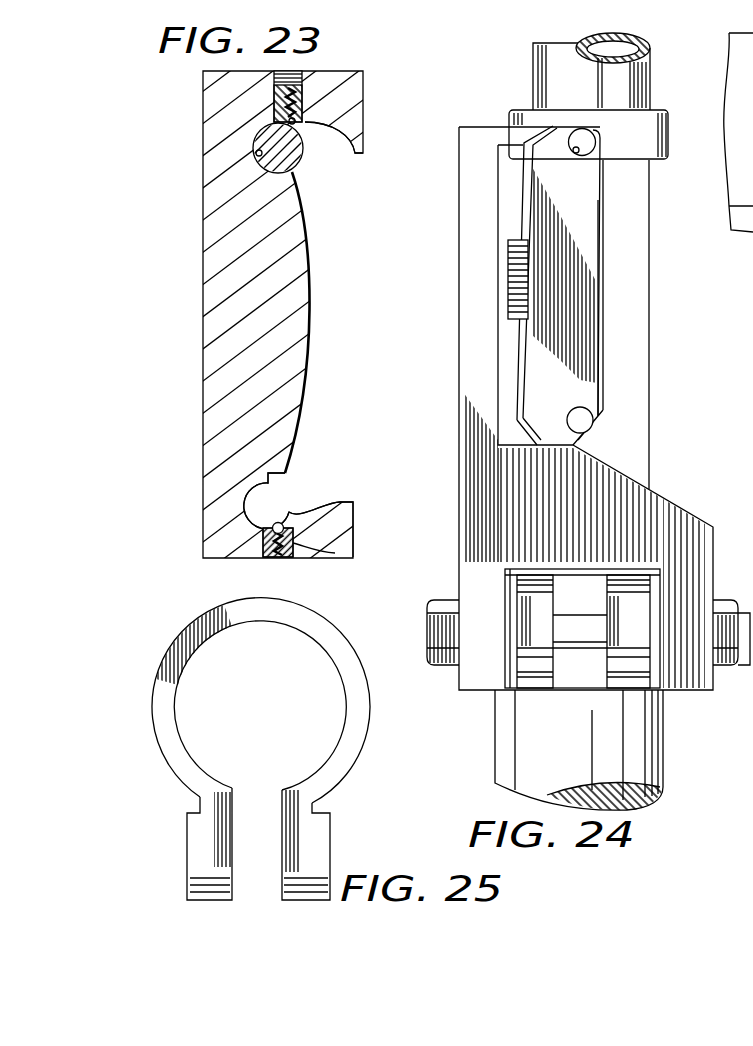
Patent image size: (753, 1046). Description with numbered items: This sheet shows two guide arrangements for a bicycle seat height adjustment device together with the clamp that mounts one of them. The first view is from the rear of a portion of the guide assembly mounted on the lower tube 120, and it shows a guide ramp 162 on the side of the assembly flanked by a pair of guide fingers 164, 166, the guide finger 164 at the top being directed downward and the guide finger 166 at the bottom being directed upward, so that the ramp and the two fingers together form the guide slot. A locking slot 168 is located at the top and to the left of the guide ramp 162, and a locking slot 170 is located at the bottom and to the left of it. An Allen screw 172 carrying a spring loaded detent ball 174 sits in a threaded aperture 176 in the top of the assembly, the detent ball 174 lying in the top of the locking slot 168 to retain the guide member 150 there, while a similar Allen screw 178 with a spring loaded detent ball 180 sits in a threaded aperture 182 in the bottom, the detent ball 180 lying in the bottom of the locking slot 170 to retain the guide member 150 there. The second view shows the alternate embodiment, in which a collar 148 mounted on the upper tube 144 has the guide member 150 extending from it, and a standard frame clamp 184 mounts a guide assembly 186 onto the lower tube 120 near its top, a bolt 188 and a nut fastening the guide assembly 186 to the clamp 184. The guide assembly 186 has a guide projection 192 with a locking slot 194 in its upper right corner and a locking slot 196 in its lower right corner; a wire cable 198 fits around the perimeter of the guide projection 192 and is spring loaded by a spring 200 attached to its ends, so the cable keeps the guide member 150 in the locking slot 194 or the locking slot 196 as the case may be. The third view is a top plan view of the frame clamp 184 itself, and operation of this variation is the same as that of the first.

In FIG. 24, the lower tube 120 is at (656, 752).
In FIG. 24, the upper tube 144 is at (636, 243).
In FIG. 24, the collar 148 is at (674, 108).
In FIG. 23, the guide member 150 is at (292, 168).
In FIG. 24, the guide member 150 is at (588, 143).
In FIG. 23, the guide ramp 162 is at (312, 308).
In FIG. 23, the guide finger 164 is at (363, 145).
In FIG. 23, the guide finger 166 is at (343, 500).
In FIG. 23, the locking slot 168 is at (258, 154).
In FIG. 23, the locking slot 170 is at (260, 483).
In FIG. 23, the Allen screw 172 is at (314, 90).
In FIG. 23, the detent ball 174 is at (294, 124).
In FIG. 23, the threaded aperture 176 is at (298, 72).
In FIG. 23, the Allen screw 178 is at (277, 562).
In FIG. 23, the detent ball 180 is at (282, 522).
In FIG. 24, the detent ball 180 is at (723, 668).
In FIG. 23, the threaded aperture 182 is at (300, 548).
In FIG. 24, the frame clamp 184 is at (543, 689).
In FIG. 25, the frame clamp 184 is at (178, 793).
In FIG. 24, the guide assembly 186 is at (453, 522).
In FIG. 24, the bolt 188 is at (448, 667).
In FIG. 24, the guide projection 192 is at (584, 232).
In FIG. 24, the locking slot 194 is at (578, 152).
In FIG. 24, the locking slot 196 is at (578, 408).
In FIG. 24, the wire cable 198 is at (604, 358).
In FIG. 24, the spring 200 is at (528, 298).